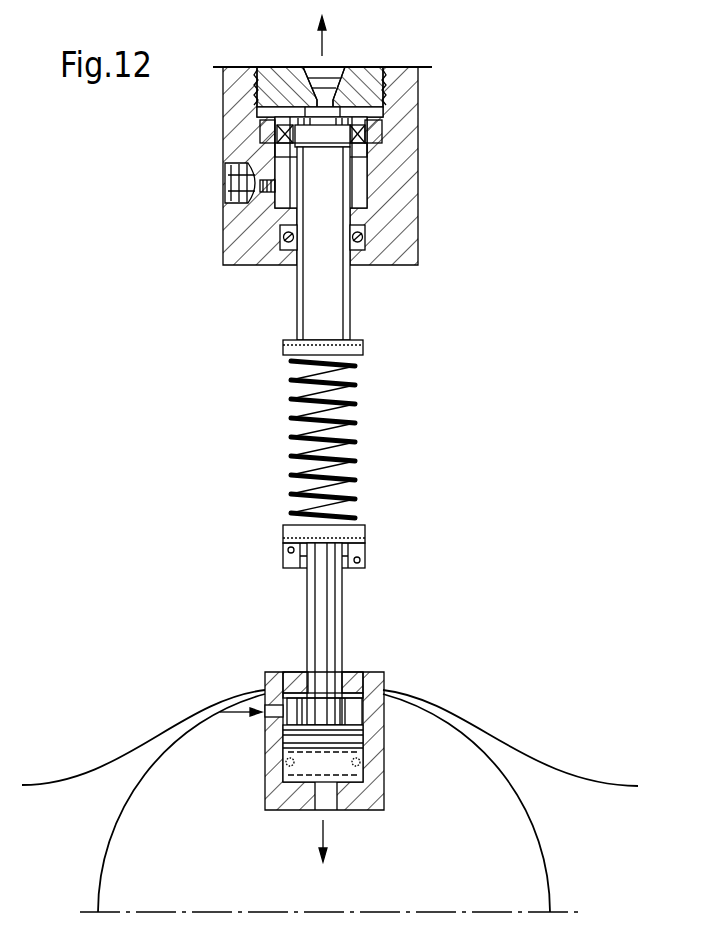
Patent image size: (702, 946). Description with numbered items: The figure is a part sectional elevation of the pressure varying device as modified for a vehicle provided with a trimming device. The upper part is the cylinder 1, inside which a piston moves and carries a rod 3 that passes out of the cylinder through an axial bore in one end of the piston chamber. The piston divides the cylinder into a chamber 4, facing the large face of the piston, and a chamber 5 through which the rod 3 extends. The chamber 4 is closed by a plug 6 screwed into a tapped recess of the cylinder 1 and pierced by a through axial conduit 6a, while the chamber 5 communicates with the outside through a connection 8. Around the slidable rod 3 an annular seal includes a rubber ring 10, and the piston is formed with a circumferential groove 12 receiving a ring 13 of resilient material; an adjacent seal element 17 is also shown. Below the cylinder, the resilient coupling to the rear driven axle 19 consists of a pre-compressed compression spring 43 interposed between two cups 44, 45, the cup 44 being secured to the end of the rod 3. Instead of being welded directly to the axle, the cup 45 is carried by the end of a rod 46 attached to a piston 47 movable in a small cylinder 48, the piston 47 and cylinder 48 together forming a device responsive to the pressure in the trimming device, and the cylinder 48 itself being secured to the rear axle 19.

The cylinder 1 is at (233, 95).
The rod 3 is at (341, 272).
The chamber 4 is at (373, 110).
The chamber 5 is at (355, 178).
The plug 6 is at (290, 94).
The through axial conduit 6a is at (334, 78).
The connection 8 is at (236, 195).
The rubber ring 10 is at (291, 250).
The circumferential groove 12 is at (318, 158).
The ring 13 is at (262, 139).
The right seal 17 is at (379, 137).
The rear driven axle 19 is at (62, 782).
The pre-compressed compression spring 43 is at (356, 397).
The cup 44 is at (364, 347).
The cup 45 is at (366, 537).
The rod 46 is at (336, 602).
The piston 47 is at (338, 742).
The small cylinder 48 is at (370, 792).